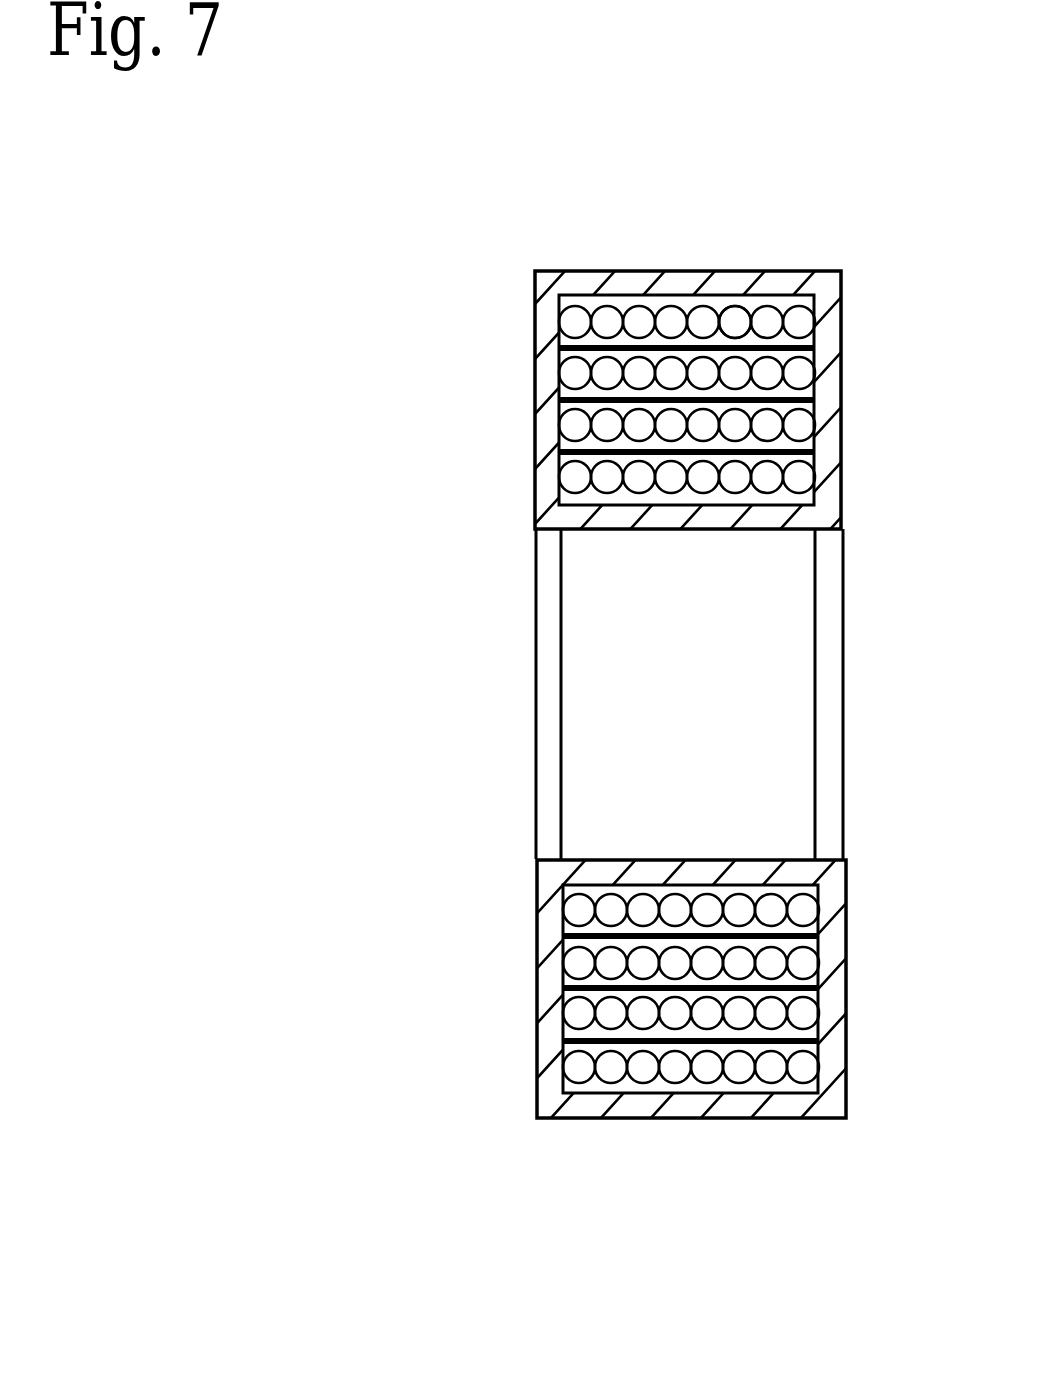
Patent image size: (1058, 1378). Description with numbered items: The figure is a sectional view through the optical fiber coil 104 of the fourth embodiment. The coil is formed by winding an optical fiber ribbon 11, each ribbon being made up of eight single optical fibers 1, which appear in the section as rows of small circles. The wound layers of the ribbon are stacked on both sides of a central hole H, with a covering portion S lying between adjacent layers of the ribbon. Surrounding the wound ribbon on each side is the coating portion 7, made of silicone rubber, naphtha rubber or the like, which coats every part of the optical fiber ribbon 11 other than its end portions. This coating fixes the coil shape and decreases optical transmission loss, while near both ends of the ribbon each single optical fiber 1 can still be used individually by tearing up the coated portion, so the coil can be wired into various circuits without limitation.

The single optical fiber 1 is at (730, 317).
The optical fiber ribbon 11 is at (732, 633).
The covering portion S is at (814, 336).
The coating portion 7 is at (833, 501).
The central hole H is at (585, 803).
The optical fiber coil 104 is at (529, 737).